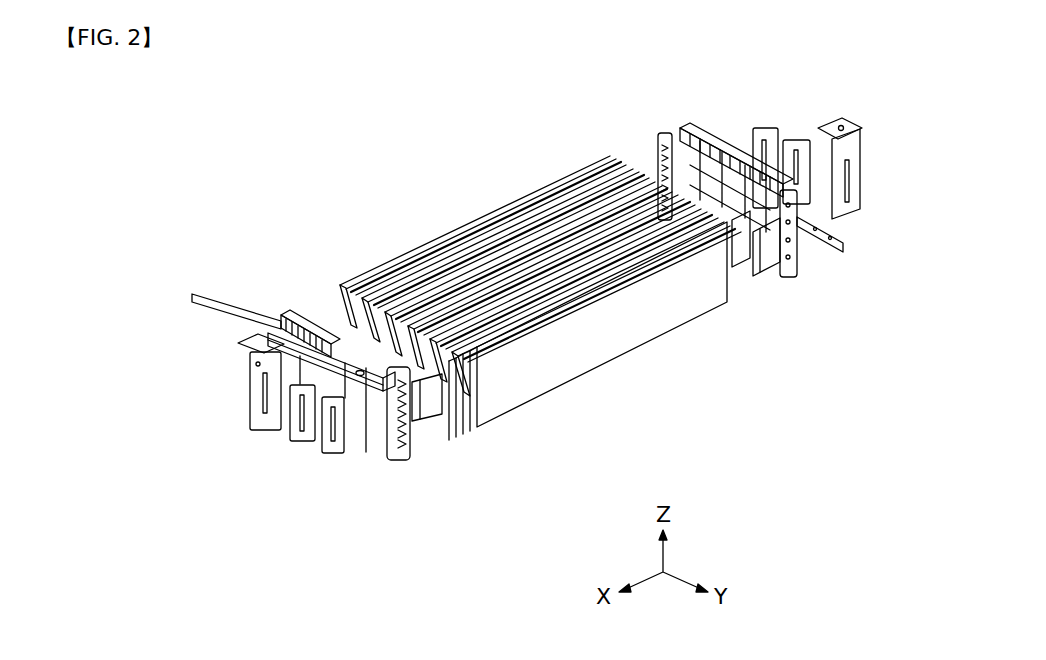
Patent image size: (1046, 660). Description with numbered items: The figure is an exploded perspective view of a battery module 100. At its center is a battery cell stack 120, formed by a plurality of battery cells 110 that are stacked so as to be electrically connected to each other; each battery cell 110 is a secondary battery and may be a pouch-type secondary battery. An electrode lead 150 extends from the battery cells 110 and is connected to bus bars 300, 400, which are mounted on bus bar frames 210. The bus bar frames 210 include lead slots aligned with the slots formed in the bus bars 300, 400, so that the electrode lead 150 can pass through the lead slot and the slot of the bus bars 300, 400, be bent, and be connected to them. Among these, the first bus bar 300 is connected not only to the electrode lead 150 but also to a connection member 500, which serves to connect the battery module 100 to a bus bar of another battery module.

The battery module 100 is at (397, 170).
The battery cell 110 is at (615, 342).
The battery cell stack 120 is at (515, 247).
The electrode lead 150 is at (433, 416).
The bus bar frame 210 is at (290, 300).
The first bus bar 300 is at (253, 402).
The bus bar 400 is at (323, 447).
The connection member 500 is at (205, 295).